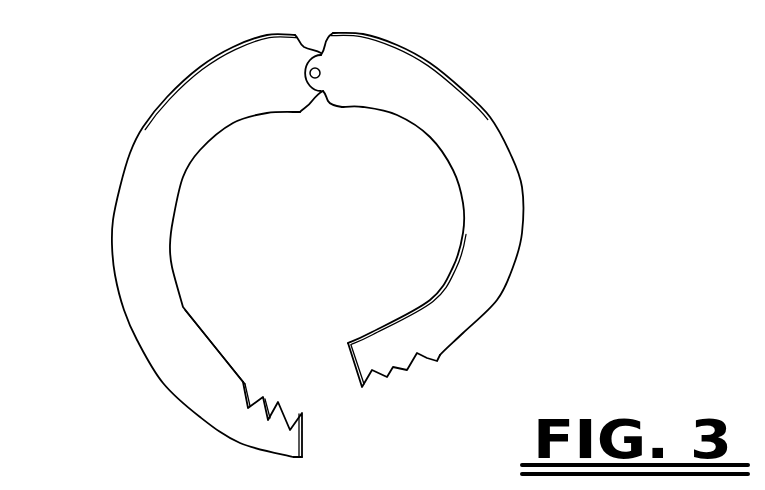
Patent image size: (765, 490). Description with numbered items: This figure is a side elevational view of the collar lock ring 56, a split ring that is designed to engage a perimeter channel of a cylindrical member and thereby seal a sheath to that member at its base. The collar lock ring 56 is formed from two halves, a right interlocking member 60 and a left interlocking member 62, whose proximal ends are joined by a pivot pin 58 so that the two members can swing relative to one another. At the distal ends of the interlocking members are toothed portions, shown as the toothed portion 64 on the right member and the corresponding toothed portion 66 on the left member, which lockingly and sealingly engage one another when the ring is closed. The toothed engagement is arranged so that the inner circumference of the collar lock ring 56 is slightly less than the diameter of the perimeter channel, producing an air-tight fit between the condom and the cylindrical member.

The collar lock ring 56 is at (510, 282).
The pivot pin 58 is at (362, 75).
The right interlocking member 60 is at (473, 130).
The left interlocking member 62 is at (133, 182).
The toothed portion 64 is at (392, 378).
The serrated teeth of first ring half 66 is at (269, 405).